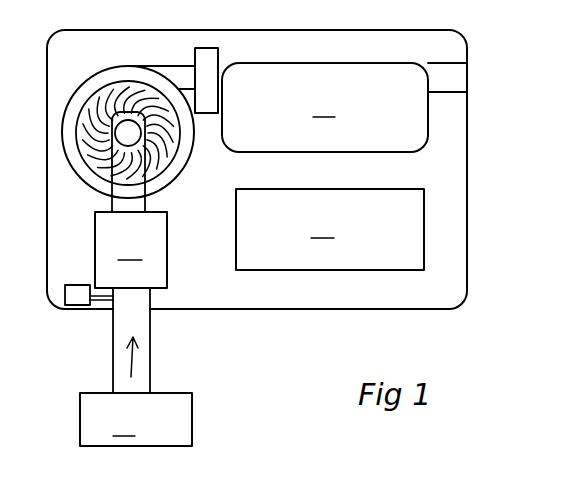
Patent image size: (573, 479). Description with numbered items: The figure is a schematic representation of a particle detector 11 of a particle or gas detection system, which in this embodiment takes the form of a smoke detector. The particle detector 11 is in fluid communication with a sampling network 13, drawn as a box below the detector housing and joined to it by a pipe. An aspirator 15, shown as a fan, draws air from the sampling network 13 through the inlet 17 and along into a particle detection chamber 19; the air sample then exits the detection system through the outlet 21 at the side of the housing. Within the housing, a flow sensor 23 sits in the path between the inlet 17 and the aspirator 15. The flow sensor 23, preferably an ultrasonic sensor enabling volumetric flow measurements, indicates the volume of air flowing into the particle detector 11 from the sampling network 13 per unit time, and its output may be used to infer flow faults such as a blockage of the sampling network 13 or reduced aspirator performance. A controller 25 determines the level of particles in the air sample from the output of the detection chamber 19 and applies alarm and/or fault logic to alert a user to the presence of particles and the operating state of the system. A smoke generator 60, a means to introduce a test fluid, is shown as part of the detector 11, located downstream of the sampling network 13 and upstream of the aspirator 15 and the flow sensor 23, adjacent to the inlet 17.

The particle detector 11 is at (467, 169).
The sampling network 13 is at (136, 419).
The aspirator 15 is at (127, 77).
The inlet 17 is at (165, 304).
The particle detection chamber 19 is at (325, 107).
The outlet 21 is at (469, 77).
The flow sensor 23 is at (131, 250).
The controller 25 is at (330, 229).
The smoke generator 60 is at (73, 300).